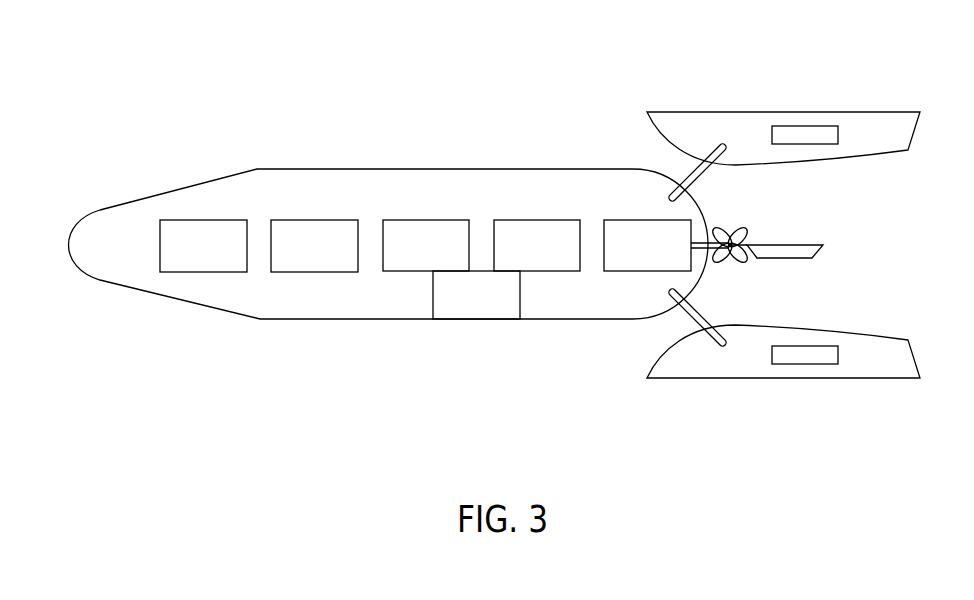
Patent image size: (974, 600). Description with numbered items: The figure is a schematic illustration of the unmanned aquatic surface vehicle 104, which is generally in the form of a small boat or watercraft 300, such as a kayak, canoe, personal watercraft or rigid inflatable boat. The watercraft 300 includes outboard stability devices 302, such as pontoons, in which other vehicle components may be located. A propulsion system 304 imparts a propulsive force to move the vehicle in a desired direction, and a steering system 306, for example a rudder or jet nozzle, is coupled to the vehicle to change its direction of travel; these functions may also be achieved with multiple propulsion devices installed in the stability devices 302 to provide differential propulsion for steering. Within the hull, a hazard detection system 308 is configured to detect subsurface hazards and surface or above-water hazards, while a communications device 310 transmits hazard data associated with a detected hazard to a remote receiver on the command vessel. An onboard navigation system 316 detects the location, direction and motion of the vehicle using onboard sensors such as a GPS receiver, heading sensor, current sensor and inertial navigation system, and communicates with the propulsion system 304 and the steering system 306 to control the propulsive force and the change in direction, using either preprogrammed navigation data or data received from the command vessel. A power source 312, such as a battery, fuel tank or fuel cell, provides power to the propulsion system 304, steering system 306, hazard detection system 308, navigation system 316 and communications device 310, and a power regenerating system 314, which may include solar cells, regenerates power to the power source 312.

The unmanned aquatic surface vehicle 104 is at (300, 70).
The watercraft 300 is at (238, 302).
The outboard stability devices 302 is at (870, 150).
The propulsion system 304 is at (666, 258).
The steering system 306 is at (793, 250).
The hazard detection system 308 is at (222, 258).
The communications device 310 is at (444, 258).
The power source 312 is at (495, 308).
The power regenerating system 314 is at (555, 258).
The onboard navigation system 316 is at (333, 258).